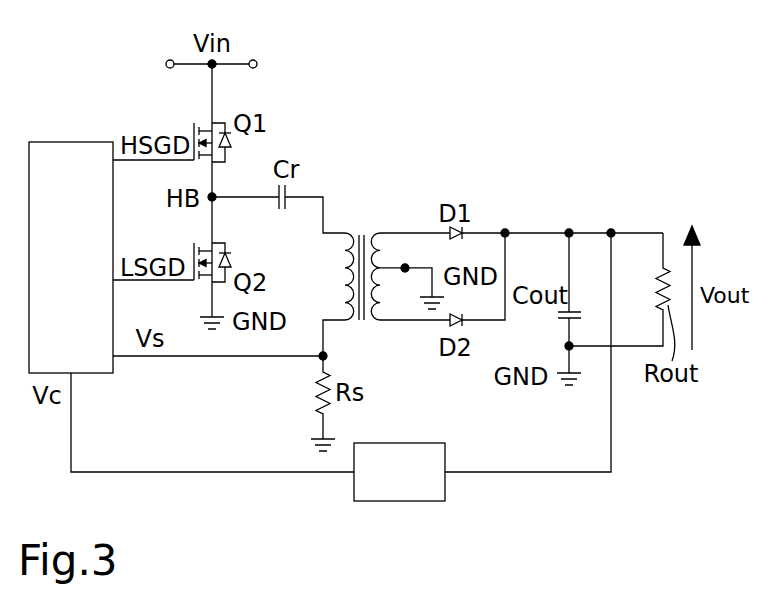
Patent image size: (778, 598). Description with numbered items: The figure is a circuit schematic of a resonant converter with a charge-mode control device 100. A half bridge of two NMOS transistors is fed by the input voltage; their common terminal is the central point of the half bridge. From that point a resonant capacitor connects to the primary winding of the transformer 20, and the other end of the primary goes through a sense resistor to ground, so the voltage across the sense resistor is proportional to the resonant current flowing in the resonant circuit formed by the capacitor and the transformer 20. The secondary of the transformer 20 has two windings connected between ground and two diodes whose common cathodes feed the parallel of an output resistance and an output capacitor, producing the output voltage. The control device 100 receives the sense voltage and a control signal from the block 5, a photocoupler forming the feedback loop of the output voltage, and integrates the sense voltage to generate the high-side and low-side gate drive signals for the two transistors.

The control device 100 is at (43, 142).
The transformer 20 is at (366, 211).
The block 5 is at (390, 501).